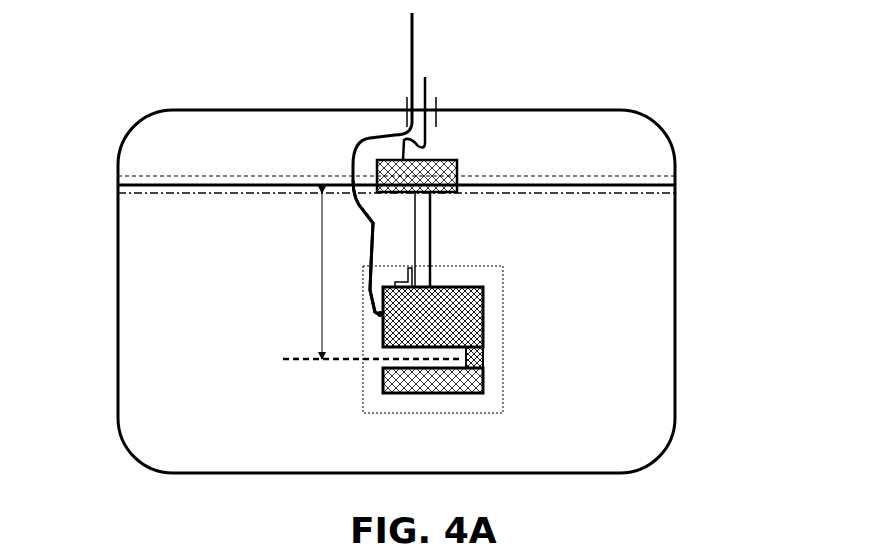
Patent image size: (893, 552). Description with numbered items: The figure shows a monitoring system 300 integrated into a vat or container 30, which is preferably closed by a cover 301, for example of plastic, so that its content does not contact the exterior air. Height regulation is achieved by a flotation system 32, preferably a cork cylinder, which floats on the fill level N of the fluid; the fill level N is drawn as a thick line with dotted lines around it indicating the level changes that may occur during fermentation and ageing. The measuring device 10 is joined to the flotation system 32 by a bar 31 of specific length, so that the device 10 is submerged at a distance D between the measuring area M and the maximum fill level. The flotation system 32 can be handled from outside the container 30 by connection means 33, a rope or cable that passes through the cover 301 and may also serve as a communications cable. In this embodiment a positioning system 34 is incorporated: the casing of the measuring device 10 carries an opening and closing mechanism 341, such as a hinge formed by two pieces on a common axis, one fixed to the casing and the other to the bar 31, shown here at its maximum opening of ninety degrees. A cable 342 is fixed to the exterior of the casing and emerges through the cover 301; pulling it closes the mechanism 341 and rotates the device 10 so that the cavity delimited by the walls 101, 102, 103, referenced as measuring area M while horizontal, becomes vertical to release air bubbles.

The monitoring system 300 is at (401, 270).
The container 30 is at (117, 350).
The cover 301 is at (157, 115).
The flotation system 32 is at (393, 162).
The cable 342 is at (417, 43).
The positioning system 34 is at (407, 280).
The connection means 33 is at (427, 90).
The bar 31 is at (423, 258).
The opening and closing mechanism 341 is at (415, 278).
The measuring device 10 is at (503, 302).
The wall 102 is at (483, 316).
The wall 103 is at (483, 359).
The wall 101 is at (470, 393).
The fill level N is at (406, 189).
The distance D is at (372, 276).
The measuring area M is at (383, 385).